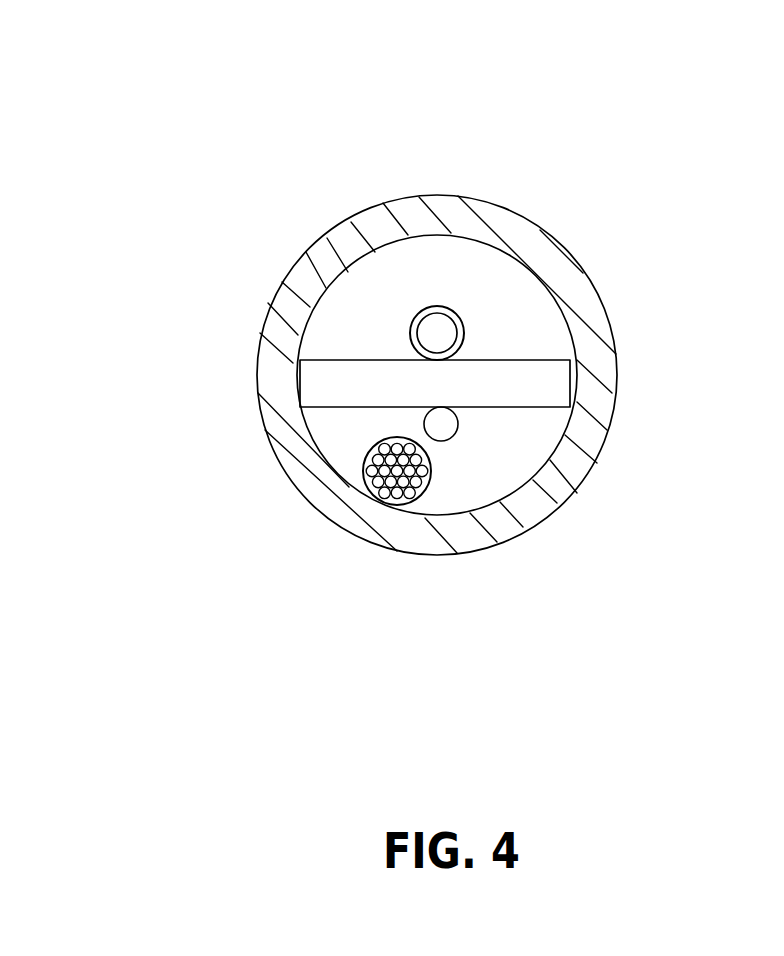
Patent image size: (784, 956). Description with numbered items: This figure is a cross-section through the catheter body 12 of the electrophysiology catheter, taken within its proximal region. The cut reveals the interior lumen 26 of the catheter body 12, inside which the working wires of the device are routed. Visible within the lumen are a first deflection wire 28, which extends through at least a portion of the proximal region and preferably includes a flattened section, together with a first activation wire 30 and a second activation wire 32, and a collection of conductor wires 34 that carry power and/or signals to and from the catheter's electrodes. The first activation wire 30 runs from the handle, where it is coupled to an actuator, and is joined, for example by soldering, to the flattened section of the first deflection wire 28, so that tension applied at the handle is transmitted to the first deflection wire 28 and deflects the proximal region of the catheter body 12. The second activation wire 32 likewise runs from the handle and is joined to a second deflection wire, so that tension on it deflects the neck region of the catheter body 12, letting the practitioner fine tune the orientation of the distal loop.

The catheter body 12 is at (445, 207).
The interior lumen 26 is at (538, 318).
The first deflection wire 28 is at (298, 372).
The first activation wire 30 is at (458, 430).
The second activation wire 32 is at (449, 306).
The conductor wires 34 is at (362, 478).